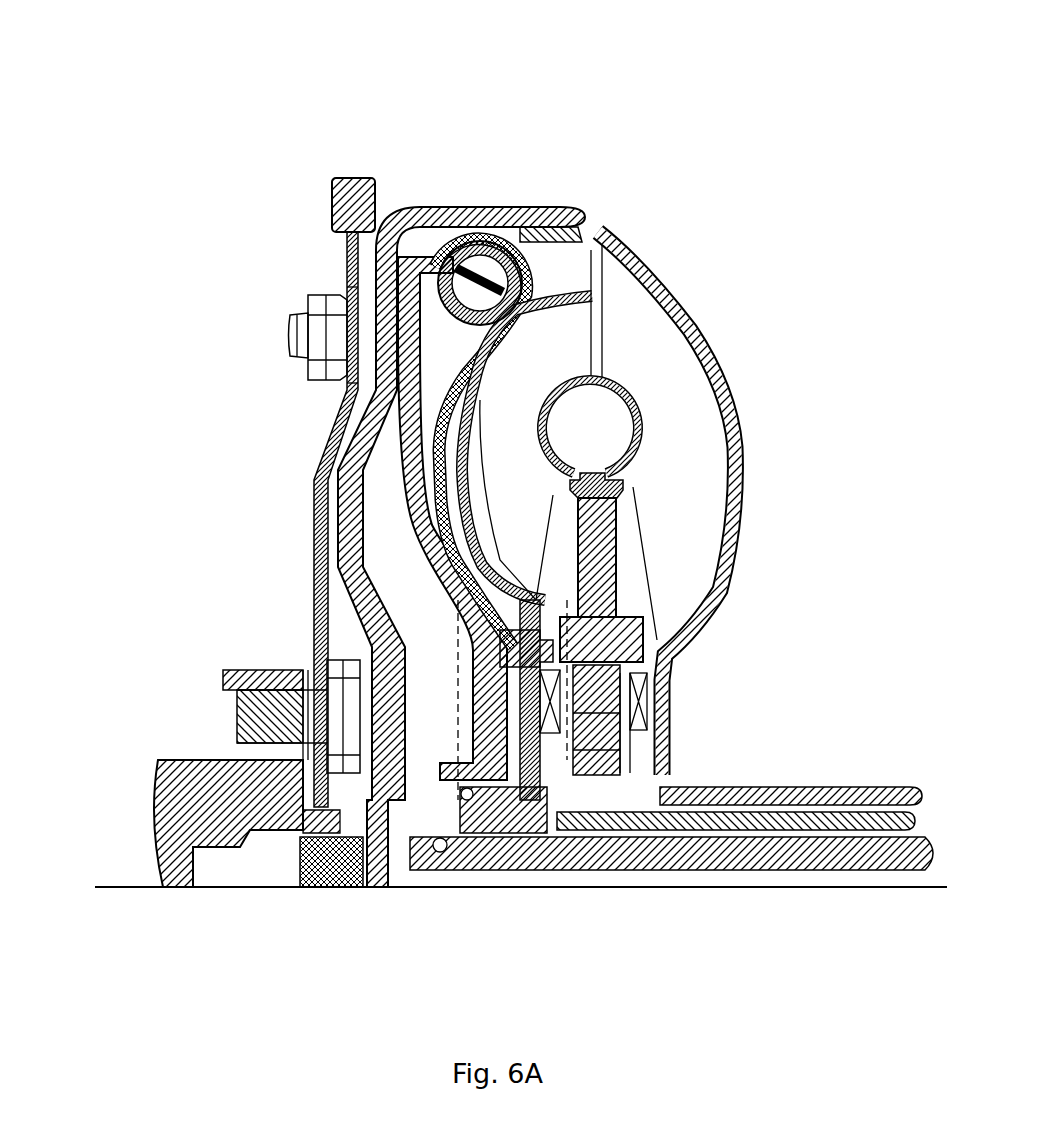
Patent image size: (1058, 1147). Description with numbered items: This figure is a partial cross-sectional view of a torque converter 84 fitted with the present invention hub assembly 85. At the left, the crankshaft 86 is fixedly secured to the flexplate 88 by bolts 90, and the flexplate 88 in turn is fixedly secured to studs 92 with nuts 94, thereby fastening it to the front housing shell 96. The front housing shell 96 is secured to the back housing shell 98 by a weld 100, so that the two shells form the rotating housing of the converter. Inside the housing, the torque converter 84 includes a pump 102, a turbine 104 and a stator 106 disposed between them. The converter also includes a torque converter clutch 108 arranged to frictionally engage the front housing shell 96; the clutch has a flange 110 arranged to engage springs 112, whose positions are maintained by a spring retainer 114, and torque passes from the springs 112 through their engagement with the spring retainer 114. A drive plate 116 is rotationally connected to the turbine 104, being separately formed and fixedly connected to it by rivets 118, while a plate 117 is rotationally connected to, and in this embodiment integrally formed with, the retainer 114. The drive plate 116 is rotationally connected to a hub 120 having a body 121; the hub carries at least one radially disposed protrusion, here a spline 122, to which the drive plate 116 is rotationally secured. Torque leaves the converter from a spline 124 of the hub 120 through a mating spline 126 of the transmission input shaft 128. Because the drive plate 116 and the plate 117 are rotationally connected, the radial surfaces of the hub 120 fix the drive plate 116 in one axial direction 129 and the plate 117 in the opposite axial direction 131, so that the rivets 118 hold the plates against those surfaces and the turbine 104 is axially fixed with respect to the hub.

The torque converter 84 is at (622, 165).
The hub assembly 85 is at (563, 588).
The crankshaft 86 is at (158, 792).
The flexplate 88 is at (322, 458).
The bolts 90 is at (262, 727).
The studs 92 is at (300, 333).
The nuts 94 is at (320, 312).
The front housing shell 96 is at (520, 210).
The back housing shell 98 is at (617, 240).
The weld 100 is at (575, 217).
The pump 102 is at (722, 363).
The turbine 104 is at (462, 539).
The stator 106 is at (622, 550).
The torque converter clutch 108 is at (408, 515).
The flange 110 is at (333, 200).
The springs 112 is at (463, 263).
The spring retainer 114 is at (487, 242).
The drive plate 116 is at (565, 745).
The plate 117 is at (492, 718).
The rivets 118 is at (517, 643).
The hub 120 is at (410, 819).
The body 121 is at (370, 886).
The spline 122 is at (542, 772).
The spline 124 is at (465, 858).
The spline 126 is at (498, 842).
The transmission input shaft 128 is at (515, 835).
The axial direction 129 is at (797, 997).
The axial direction 131 is at (790, 965).